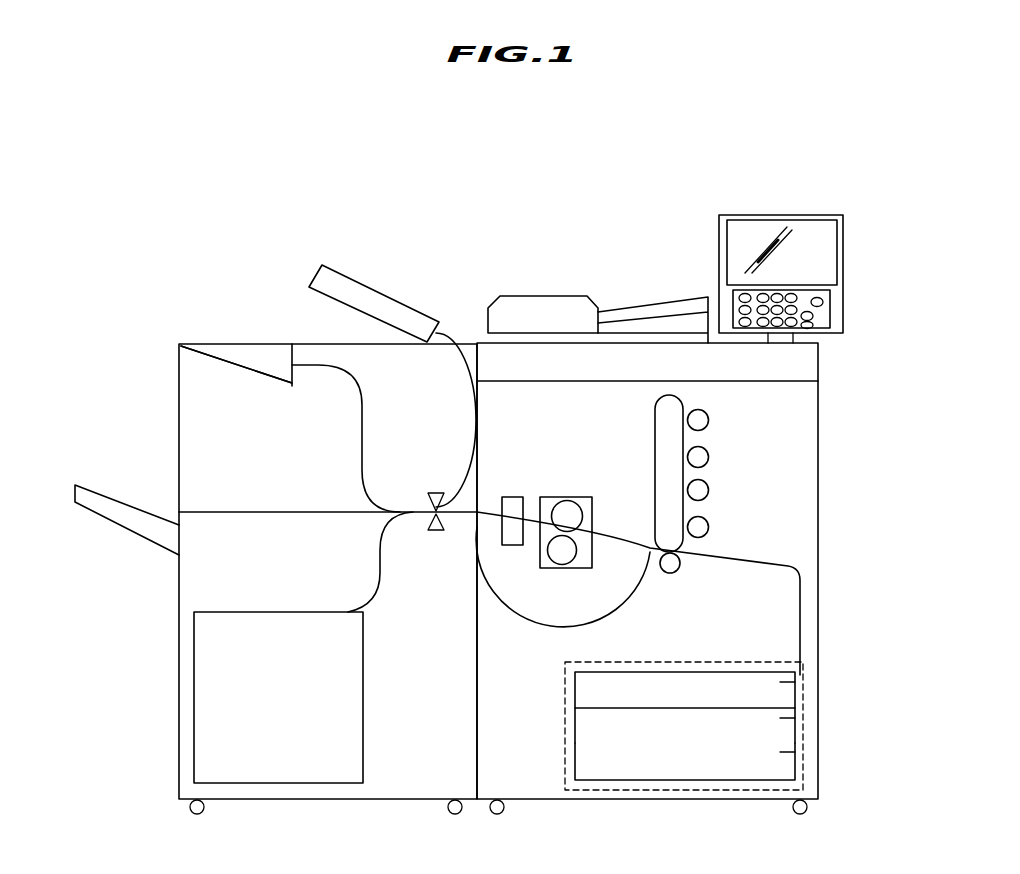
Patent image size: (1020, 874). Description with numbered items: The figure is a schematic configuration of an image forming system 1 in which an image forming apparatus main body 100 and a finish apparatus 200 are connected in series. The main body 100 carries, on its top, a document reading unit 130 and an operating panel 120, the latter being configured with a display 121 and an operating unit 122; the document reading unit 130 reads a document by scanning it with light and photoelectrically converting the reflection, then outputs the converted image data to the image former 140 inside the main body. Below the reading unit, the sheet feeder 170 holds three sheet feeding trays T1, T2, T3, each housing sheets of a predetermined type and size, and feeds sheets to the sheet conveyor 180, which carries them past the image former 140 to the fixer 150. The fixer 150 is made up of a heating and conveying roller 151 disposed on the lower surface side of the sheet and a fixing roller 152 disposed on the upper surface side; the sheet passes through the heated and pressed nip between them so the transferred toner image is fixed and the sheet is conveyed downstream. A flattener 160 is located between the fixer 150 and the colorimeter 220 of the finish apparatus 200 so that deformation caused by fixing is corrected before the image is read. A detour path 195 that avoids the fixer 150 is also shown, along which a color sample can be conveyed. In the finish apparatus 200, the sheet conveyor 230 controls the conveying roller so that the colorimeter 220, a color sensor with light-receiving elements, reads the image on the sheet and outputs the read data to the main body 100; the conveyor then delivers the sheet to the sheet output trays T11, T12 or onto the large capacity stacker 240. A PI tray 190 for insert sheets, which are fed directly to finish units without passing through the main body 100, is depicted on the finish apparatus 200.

The image forming system 1 is at (627, 172).
The image forming apparatus main body 100 is at (567, 800).
The operating panel 120 is at (762, 171).
The display 121 is at (740, 240).
The operating unit 122 is at (805, 295).
The document reading unit 130 is at (563, 297).
The image former 140 is at (722, 436).
The fixer 150 is at (565, 495).
The heating and conveying roller 151 is at (562, 553).
The fixing roller 152 is at (575, 518).
The flattener 160 is at (510, 493).
The sheet feeder 170 is at (807, 707).
The sheet conveyor 180 is at (727, 557).
The PI tray 190 is at (410, 305).
The detour path 195 is at (622, 610).
The finish apparatus 200 is at (325, 800).
The colorimeter 220 is at (437, 491).
The sheet conveyor 230 is at (375, 558).
The large capacity stacker 240 is at (247, 612).
The sheet feeding tray T1 is at (580, 693).
The sheet feeding tray T2 is at (580, 727).
The sheet feeding tray T3 is at (580, 762).
The sheet output tray T11 is at (112, 495).
The sheet output tray T12 is at (242, 363).